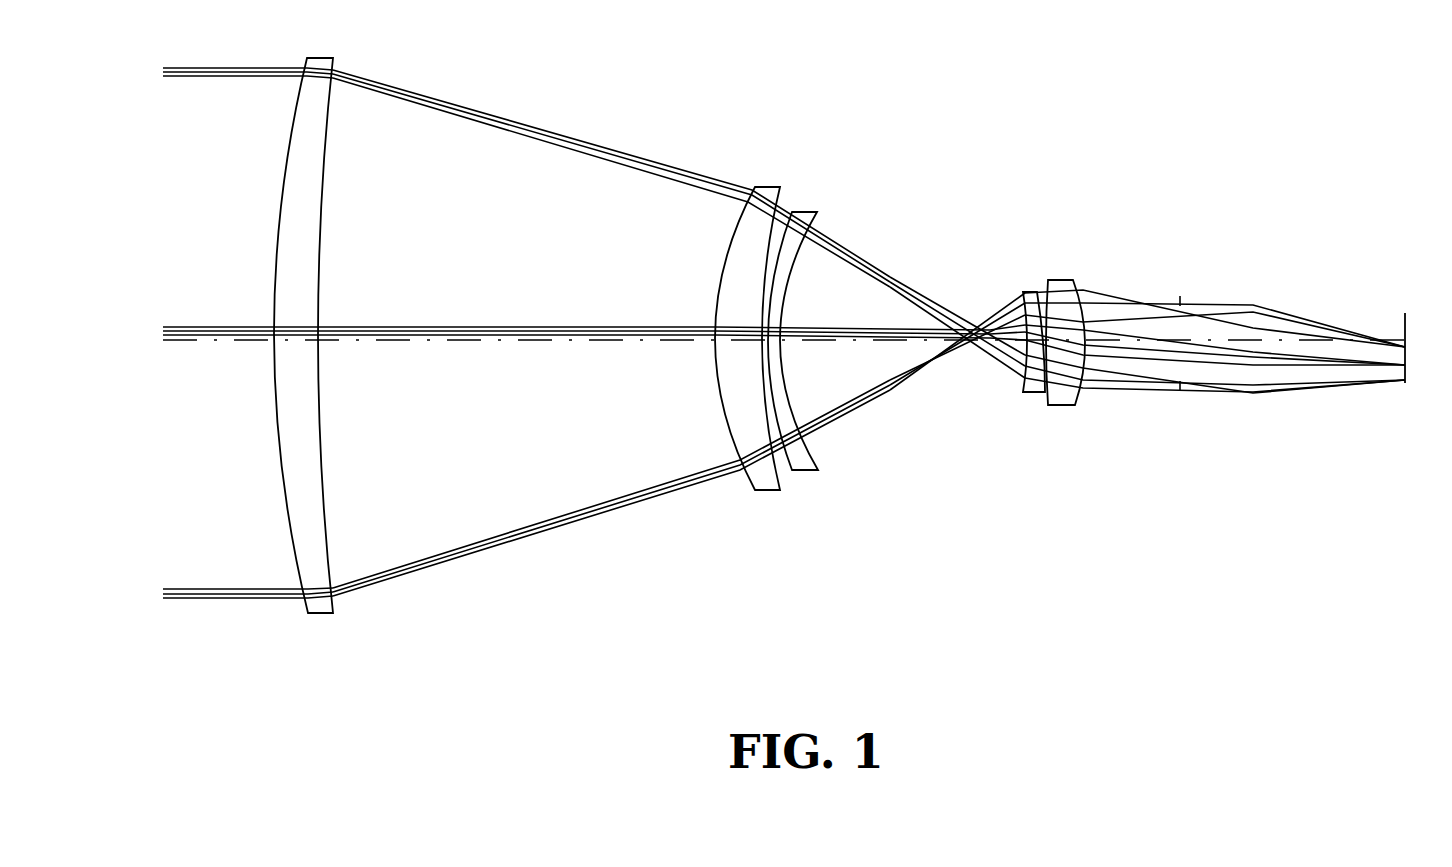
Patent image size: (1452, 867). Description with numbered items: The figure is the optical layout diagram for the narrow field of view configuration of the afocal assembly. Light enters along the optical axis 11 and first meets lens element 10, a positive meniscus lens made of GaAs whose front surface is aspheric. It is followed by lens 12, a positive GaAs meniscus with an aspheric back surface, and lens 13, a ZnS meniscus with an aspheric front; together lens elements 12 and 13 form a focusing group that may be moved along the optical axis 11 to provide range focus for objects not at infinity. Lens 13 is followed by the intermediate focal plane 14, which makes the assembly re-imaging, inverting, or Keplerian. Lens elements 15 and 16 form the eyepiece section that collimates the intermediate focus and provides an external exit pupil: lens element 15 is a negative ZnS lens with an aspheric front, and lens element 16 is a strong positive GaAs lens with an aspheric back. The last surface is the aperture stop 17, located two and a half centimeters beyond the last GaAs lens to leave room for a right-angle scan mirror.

The lens element 10 is at (344, 335).
The optical axis 11 is at (248, 333).
The lens 12 is at (747, 292).
The lens 13 is at (815, 300).
The intermediate focal plane 14 is at (957, 399).
The lens element 15 is at (1020, 304).
The lens element 16 is at (1090, 304).
The aperture stop 17 is at (1409, 425).